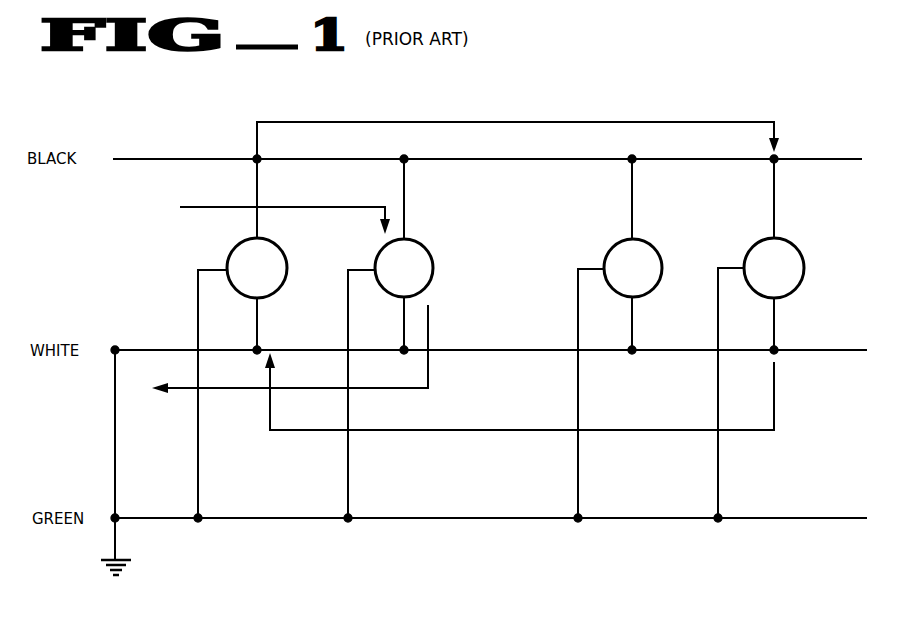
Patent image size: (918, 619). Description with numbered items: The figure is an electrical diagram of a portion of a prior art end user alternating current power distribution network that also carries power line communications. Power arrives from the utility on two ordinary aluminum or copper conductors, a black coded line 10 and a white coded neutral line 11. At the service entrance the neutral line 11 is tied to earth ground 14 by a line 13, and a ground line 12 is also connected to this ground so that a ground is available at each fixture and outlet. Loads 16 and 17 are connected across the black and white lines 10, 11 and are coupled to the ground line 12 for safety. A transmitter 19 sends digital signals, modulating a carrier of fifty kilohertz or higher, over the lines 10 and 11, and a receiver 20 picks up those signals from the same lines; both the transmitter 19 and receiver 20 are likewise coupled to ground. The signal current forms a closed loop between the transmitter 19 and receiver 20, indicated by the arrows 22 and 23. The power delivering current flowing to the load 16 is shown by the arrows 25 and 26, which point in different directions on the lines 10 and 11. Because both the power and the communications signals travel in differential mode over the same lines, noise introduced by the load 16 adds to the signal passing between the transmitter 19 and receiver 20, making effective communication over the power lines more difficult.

The black coded line 10 is at (160, 158).
The neutral line 11 is at (158, 348).
The ground line 12 is at (157, 516).
The line connecting neutral to ground 13 is at (113, 432).
The earth ground 14 is at (117, 542).
The load 16 is at (432, 254).
The load 17 is at (656, 250).
The transmitter 19 is at (281, 253).
The receiver 20 is at (800, 251).
The signal path arrow 22 is at (514, 121).
The signal path arrow 23 is at (507, 429).
The power current arrow 25 is at (201, 207).
The power current arrow 26 is at (230, 389).